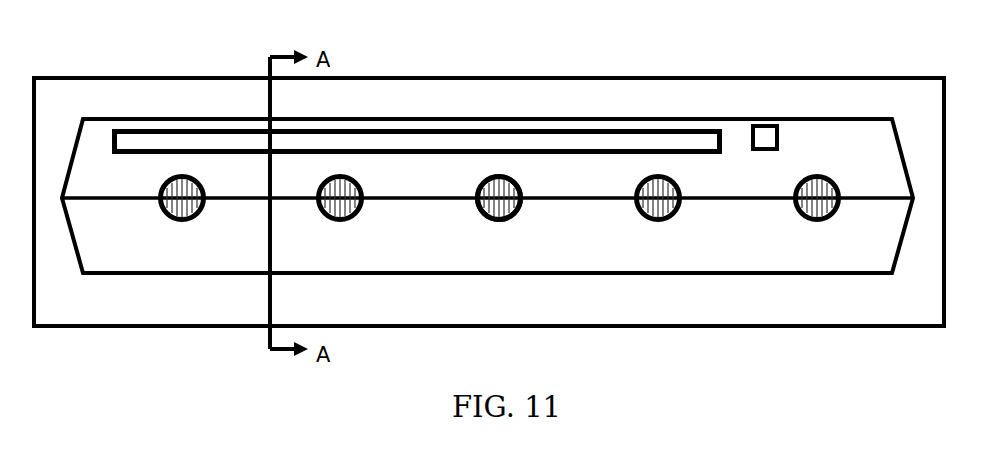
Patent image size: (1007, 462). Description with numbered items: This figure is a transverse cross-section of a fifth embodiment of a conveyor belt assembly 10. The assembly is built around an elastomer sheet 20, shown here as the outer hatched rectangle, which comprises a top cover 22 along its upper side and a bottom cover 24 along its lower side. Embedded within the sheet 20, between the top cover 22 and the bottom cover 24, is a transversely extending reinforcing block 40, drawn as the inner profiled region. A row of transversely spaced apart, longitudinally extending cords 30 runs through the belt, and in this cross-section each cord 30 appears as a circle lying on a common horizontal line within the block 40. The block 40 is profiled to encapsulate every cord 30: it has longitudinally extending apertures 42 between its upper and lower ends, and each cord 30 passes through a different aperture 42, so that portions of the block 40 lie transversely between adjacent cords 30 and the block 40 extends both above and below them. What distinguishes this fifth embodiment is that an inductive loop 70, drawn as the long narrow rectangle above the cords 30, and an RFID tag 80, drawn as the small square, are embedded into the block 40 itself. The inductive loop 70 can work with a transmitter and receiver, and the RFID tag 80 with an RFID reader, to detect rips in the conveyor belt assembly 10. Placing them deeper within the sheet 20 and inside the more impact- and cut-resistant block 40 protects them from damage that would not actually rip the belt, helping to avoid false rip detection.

The conveyor belt assembly 10 is at (110, 60).
The elastomer sheet 20 is at (856, 77).
The top cover 22 is at (912, 84).
The bottom cover 24 is at (916, 322).
The cords 30 is at (818, 173).
The reinforcing block 40 is at (199, 118).
The apertures 42 is at (499, 175).
The inductive loop 70 is at (627, 129).
The RFID tag 80 is at (760, 124).